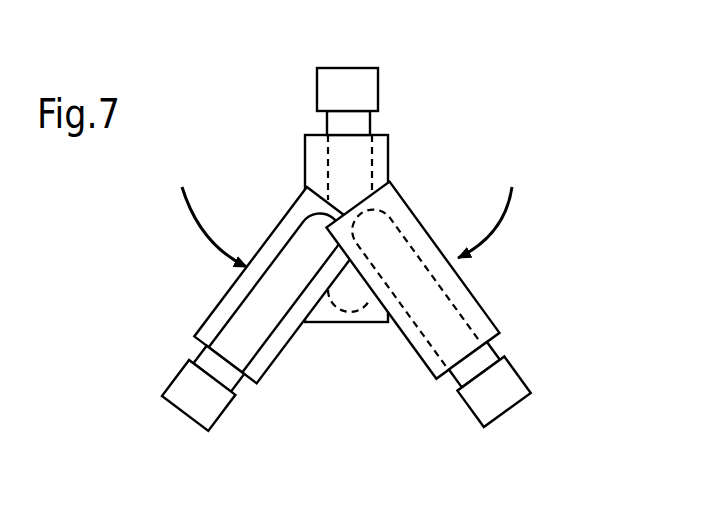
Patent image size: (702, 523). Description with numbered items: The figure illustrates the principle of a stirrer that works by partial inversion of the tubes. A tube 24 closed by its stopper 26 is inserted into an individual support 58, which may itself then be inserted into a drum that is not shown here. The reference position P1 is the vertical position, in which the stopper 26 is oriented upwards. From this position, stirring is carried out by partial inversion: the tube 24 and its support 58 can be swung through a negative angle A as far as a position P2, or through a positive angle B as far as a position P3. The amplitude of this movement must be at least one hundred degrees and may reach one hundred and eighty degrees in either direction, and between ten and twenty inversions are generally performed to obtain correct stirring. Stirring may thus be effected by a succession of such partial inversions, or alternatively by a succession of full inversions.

The individual support 58 is at (388, 163).
The tube 24 is at (369, 114).
The stopper 26 is at (362, 72).
The reference position P1 is at (320, 62).
The position P2 is at (150, 393).
The position P3 is at (515, 413).
The negative angle A is at (207, 227).
The positive angle B is at (495, 222).